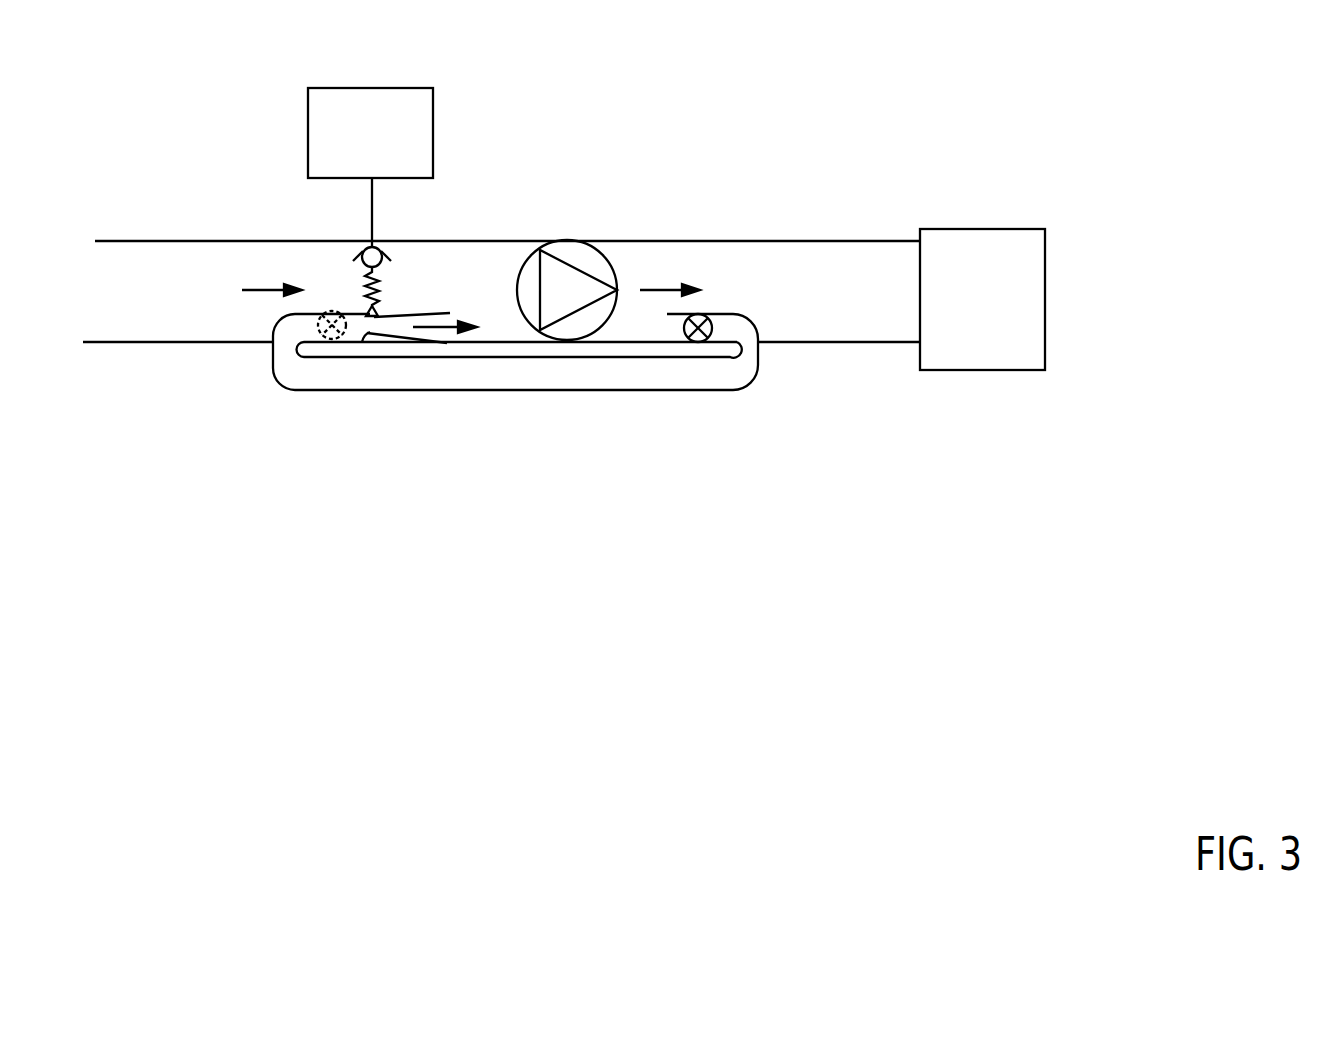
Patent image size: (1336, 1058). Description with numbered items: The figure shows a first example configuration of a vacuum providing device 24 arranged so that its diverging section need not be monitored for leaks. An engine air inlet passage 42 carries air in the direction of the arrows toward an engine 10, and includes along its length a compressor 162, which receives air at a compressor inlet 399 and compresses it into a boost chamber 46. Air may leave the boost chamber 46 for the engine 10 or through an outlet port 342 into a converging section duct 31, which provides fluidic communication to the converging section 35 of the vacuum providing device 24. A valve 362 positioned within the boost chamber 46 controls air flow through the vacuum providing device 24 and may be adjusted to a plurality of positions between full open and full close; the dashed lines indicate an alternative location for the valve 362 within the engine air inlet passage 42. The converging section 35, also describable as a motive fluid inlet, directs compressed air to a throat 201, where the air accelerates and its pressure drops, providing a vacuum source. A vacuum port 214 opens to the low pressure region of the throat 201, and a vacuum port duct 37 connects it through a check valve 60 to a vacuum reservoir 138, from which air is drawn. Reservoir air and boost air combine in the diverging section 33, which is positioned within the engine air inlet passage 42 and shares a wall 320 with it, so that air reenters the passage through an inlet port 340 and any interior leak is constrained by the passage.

The engine 10 is at (969, 309).
The vacuum reservoir 138 is at (350, 142).
The engine air inlet passage 42 is at (154, 300).
The boost chamber 46 is at (787, 303).
The check valve 60 is at (360, 256).
The vacuum port duct 37 is at (368, 315).
The vacuum port 214 is at (378, 317).
The diverging section 33 is at (421, 315).
The inlet port 340 is at (283, 349).
The outlet port 342 is at (747, 340).
The valve 362 is at (322, 338).
The wall 320 is at (505, 341).
The converging section duct 31 is at (565, 392).
The throat 201 is at (383, 335).
The converging section 35 is at (370, 332).
The compressor 162 is at (566, 240).
The compressor inlet 399 is at (515, 262).
The vacuum providing device 24 is at (252, 474).